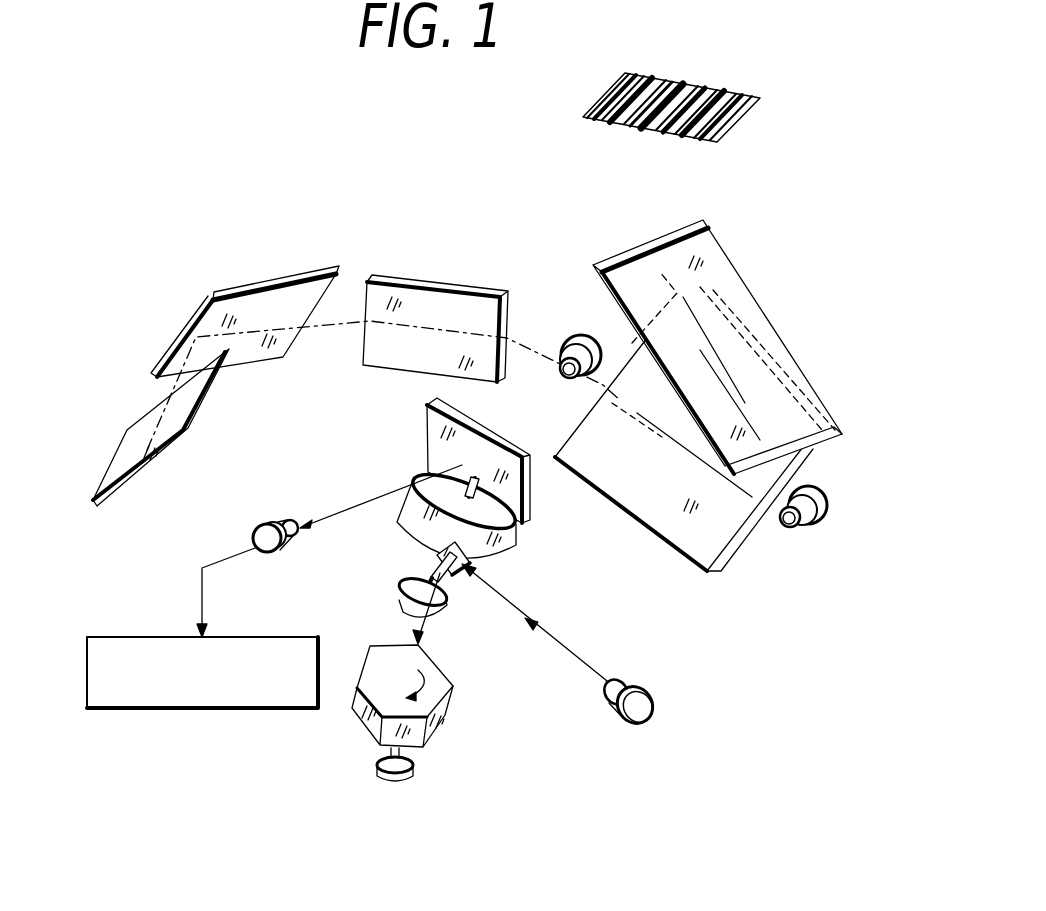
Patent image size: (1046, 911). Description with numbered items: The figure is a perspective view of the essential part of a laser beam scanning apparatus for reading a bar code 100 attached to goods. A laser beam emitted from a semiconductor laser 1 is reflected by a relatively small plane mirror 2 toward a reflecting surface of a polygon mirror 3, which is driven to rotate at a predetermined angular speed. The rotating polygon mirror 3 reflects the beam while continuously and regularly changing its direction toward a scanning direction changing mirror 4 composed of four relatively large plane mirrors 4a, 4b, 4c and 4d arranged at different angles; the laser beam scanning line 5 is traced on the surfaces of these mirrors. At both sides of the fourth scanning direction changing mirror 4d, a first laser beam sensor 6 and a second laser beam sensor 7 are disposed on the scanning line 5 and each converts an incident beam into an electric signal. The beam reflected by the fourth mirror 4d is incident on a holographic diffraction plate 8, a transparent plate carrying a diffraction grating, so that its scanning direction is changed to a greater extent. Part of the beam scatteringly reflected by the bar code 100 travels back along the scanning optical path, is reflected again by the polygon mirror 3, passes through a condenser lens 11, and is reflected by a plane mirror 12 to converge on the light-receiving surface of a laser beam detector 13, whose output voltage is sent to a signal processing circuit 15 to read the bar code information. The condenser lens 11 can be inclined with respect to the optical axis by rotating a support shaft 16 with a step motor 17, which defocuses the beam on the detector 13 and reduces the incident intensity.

The semiconductor laser 1 is at (650, 707).
The plane mirror 2 is at (468, 567).
The polygon mirror 3 is at (438, 737).
The scanning direction changing mirror 4 is at (453, 417).
The scanning direction changing mirror 4a is at (133, 482).
The scanning direction changing mirror 4b is at (242, 290).
The scanning direction changing mirror 4c is at (467, 288).
The fourth scanning direction changing mirror 4d is at (650, 530).
The laser beam scanning line 5 is at (420, 328).
The first laser beam sensor 6 is at (570, 335).
The second laser beam sensor 7 is at (795, 532).
The holographic diffraction plate 8 is at (747, 280).
The condenser lens 11 is at (503, 542).
The plane mirror 12 is at (435, 428).
The laser beam detector 13 is at (270, 520).
The signal processing circuit 15 is at (177, 710).
The support shaft 16 is at (442, 563).
The step motor 17 is at (402, 598).
The bar code 100 is at (740, 125).